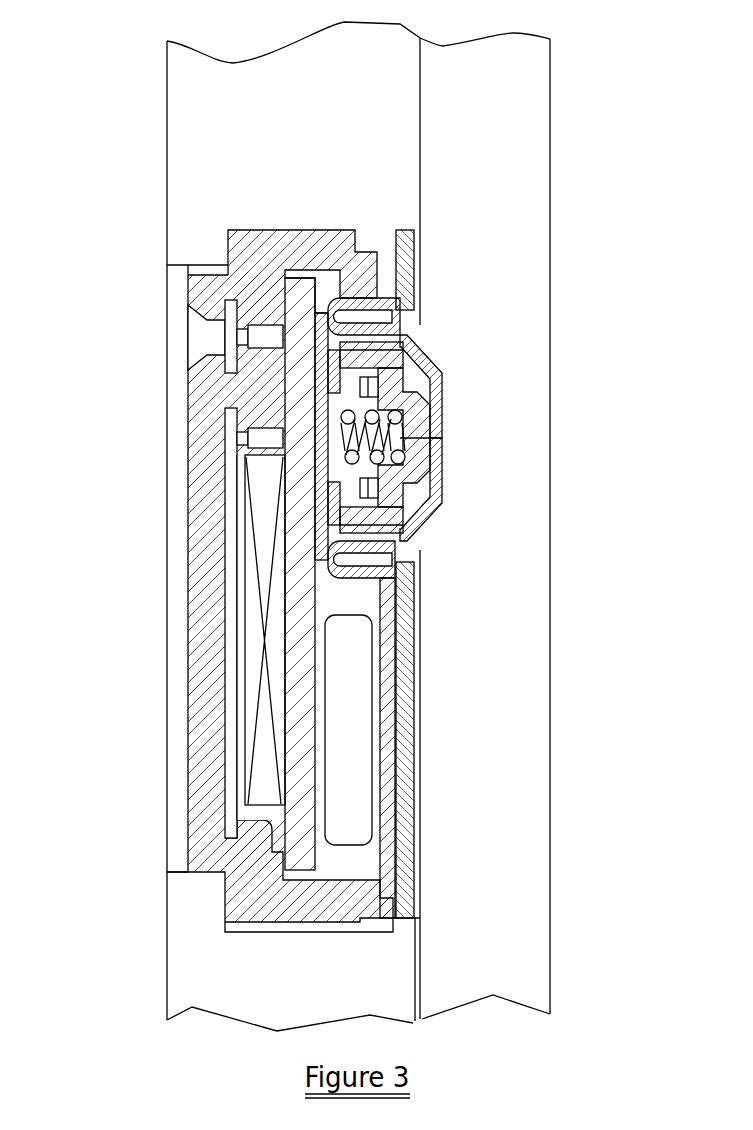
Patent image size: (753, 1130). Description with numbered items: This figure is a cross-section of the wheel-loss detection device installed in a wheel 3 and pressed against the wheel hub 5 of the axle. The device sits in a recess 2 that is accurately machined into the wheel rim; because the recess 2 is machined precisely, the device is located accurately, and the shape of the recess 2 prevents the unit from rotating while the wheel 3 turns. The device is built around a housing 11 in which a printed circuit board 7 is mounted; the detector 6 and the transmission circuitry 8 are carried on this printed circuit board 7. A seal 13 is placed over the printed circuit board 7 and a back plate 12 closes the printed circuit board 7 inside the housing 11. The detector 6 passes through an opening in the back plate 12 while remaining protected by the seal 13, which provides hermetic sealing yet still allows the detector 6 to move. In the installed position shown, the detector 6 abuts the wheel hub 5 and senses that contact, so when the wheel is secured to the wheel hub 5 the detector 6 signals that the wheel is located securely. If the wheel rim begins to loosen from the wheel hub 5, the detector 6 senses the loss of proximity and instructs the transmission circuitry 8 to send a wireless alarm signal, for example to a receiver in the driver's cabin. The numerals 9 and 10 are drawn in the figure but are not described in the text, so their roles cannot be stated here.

The recess 2 is at (228, 243).
The wheel 3 is at (240, 147).
The wheel hub 5 is at (482, 142).
The detector 6 is at (417, 435).
The printed circuit board 7 is at (293, 717).
The transmission circuitry 8 is at (345, 777).
The coil 9 is at (265, 657).
The lower housing body 10 is at (225, 495).
The housing 11 is at (210, 400).
The back plate 12 is at (400, 271).
The seal 13 is at (385, 606).